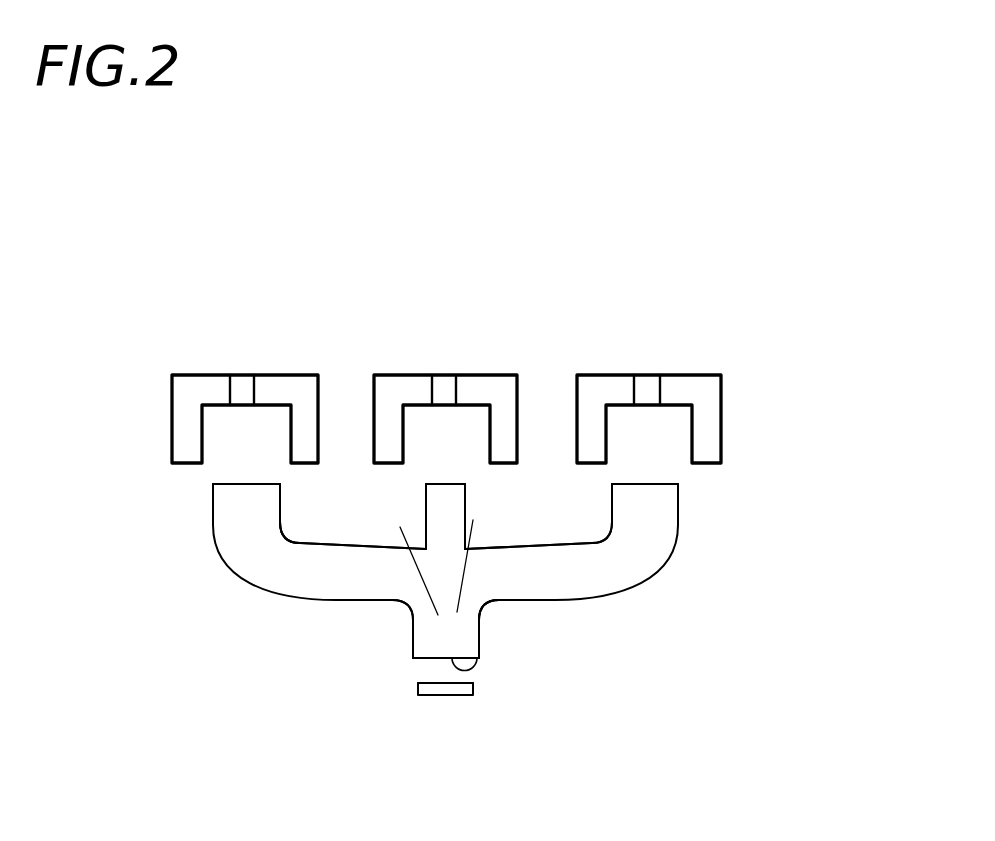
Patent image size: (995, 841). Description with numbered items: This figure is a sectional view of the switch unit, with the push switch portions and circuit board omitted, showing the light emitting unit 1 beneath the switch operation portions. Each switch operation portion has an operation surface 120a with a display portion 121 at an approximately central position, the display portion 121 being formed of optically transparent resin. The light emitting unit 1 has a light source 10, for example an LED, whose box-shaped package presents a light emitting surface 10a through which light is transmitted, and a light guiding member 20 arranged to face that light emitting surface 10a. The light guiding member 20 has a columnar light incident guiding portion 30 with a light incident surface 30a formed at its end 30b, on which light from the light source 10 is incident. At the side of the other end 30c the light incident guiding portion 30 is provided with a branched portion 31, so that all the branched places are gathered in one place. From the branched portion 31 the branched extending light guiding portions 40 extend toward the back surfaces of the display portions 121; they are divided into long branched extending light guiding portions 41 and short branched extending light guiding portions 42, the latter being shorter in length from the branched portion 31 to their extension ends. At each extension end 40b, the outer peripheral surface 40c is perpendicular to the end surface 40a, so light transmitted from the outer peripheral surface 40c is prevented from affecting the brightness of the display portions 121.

The light emitting unit 1 is at (433, 287).
The light source 10 is at (467, 700).
The light emitting surface 10a is at (438, 683).
The light guiding member 20 is at (617, 590).
The light incident guiding portion 30 is at (435, 640).
The light incident surface 30a is at (467, 650).
The end 30b is at (484, 624).
The other end 30c is at (473, 521).
The branched portion 31 is at (400, 527).
The branched extending light guiding portion 40 is at (418, 540).
The end surface 40a is at (243, 484).
The extension end 40b is at (215, 498).
The outer peripheral surface 40c is at (270, 500).
The long branched extending light guiding portion 41 is at (258, 562).
The short branched extending light guiding portion 42 is at (437, 520).
The operation surface 120a is at (277, 377).
The display portion 121 is at (240, 377).